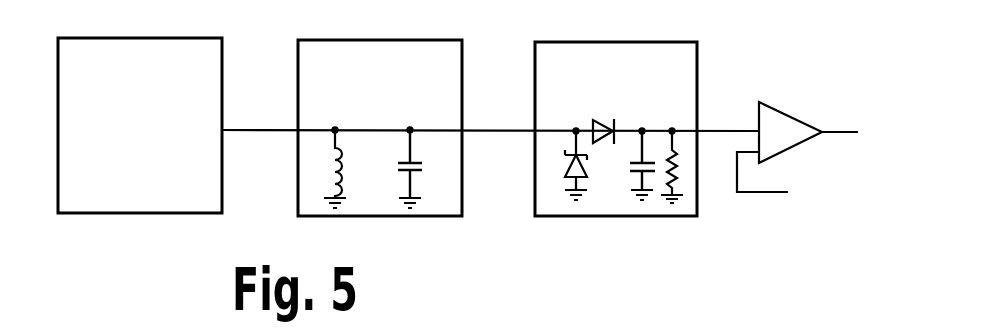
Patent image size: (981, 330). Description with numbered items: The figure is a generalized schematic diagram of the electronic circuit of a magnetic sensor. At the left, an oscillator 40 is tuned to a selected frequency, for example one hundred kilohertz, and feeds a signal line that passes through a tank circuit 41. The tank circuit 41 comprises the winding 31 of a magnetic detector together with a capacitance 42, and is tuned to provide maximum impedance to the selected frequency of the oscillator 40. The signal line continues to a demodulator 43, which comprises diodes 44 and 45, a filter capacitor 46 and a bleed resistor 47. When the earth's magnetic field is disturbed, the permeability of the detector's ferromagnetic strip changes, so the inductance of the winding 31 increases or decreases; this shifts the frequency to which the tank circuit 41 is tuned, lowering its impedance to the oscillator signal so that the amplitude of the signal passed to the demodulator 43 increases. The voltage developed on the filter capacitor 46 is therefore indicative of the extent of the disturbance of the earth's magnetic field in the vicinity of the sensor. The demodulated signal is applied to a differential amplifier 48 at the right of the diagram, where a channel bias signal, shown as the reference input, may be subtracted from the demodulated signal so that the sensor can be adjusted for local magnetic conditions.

The winding 31 is at (326, 167).
The oscillator 40 is at (192, 214).
The tank circuit 41 is at (385, 217).
The capacitance 42 is at (428, 165).
The demodulator 43 is at (588, 42).
The diode 44 is at (565, 168).
The diode 45 is at (606, 118).
The filter capacitor 46 is at (628, 168).
The bleed resistor 47 is at (677, 172).
The differential amplifier 48 is at (790, 117).